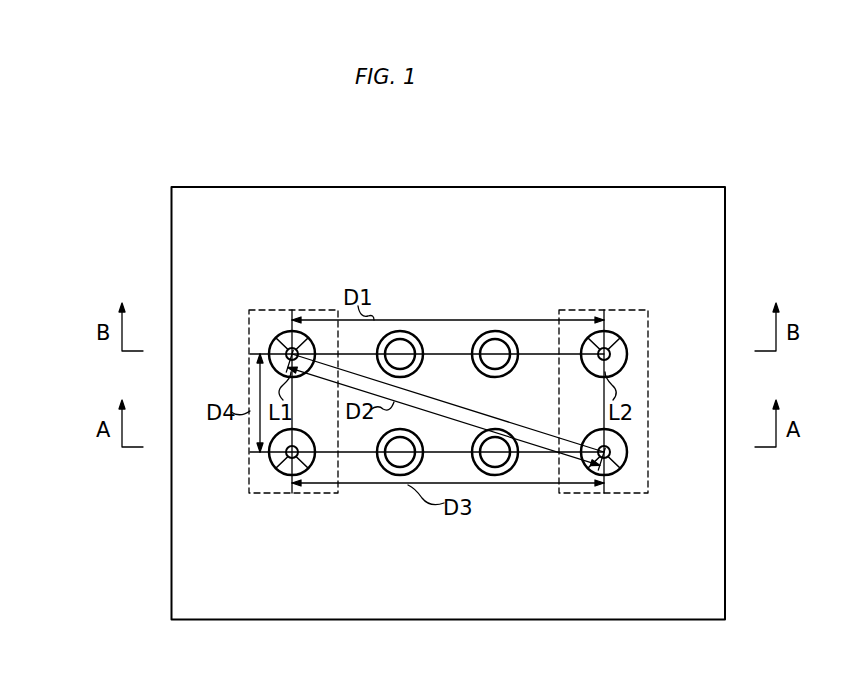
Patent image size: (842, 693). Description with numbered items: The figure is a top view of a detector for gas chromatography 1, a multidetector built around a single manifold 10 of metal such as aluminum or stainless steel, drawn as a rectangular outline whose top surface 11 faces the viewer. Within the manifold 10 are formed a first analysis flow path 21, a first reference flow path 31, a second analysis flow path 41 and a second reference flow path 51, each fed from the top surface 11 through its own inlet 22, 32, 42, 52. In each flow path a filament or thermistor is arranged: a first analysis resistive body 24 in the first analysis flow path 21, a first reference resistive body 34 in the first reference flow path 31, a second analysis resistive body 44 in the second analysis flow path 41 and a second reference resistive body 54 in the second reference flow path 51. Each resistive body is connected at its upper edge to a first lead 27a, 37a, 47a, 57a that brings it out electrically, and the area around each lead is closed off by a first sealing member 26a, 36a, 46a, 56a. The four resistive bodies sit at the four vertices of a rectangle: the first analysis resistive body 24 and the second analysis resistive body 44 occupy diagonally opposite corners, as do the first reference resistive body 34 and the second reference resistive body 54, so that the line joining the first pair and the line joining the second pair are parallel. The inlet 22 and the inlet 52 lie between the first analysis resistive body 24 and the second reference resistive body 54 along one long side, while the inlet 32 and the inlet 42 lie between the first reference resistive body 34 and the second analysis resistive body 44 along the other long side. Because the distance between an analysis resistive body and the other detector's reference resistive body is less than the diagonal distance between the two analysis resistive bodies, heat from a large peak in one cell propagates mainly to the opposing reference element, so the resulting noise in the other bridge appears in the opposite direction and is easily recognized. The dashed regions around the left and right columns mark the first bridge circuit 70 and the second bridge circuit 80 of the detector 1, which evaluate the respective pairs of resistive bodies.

The detector for gas chromatography 1 is at (685, 168).
The manifold 10 is at (171, 211).
The top surface 11 is at (233, 229).
The first analysis flow path 21 is at (406, 356).
The inlet 22 is at (414, 330).
The first analysis resistive body 24 is at (299, 351).
The first sealing member 26a is at (281, 337).
The first lead 27a is at (272, 343).
The first reference flow path 31 is at (405, 452).
The inlet 32 is at (412, 486).
The first reference resistive body 34 is at (301, 456).
The first sealing member 36a is at (286, 474).
The first lead 37a is at (273, 464).
The second analysis flow path 41 is at (500, 452).
The inlet 42 is at (502, 486).
The second analysis resistive body 44 is at (599, 455).
The first sealing member 46a is at (610, 474).
The first lead 47a is at (626, 466).
The second reference flow path 51 is at (498, 355).
The inlet 52 is at (508, 317).
The second reference resistive body 54 is at (601, 352).
The first sealing member 56a is at (615, 337).
The first lead 57a is at (625, 343).
The first bridge circuit 70 is at (249, 378).
The second bridge circuit 80 is at (648, 396).